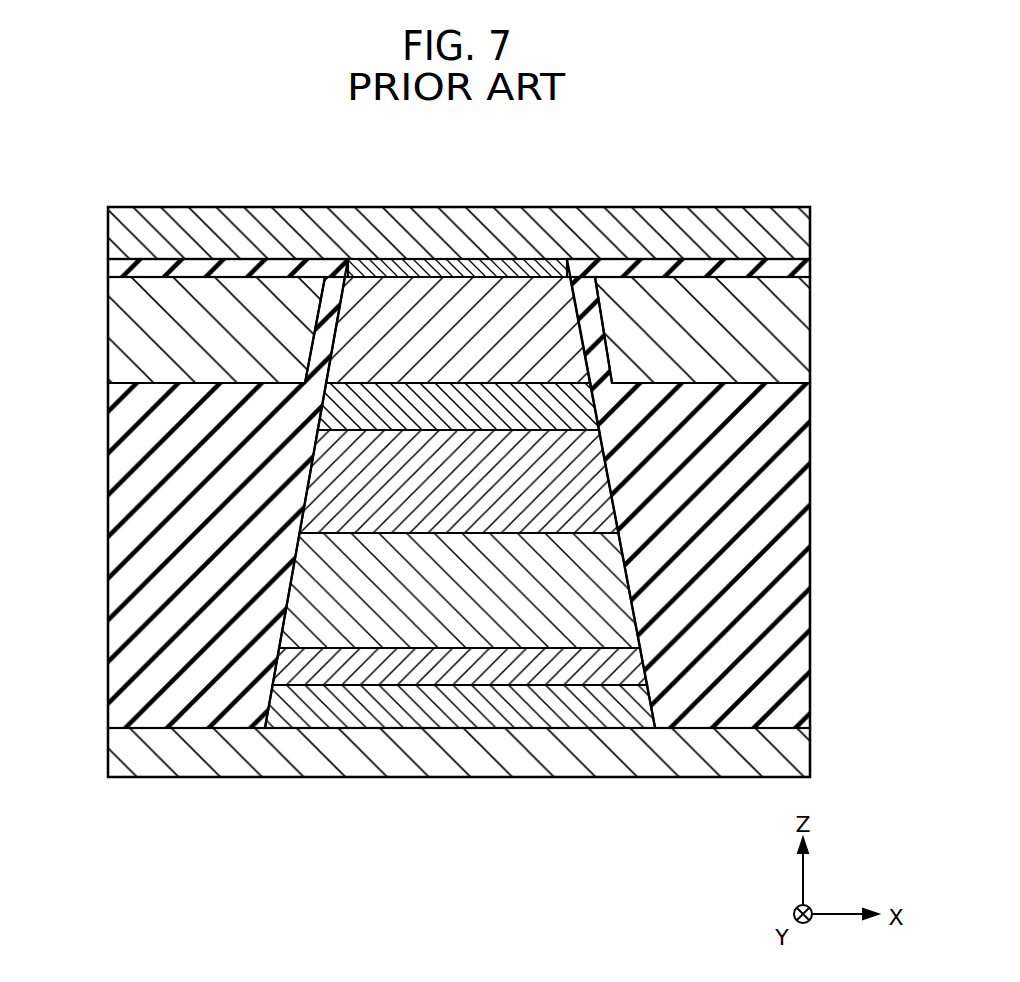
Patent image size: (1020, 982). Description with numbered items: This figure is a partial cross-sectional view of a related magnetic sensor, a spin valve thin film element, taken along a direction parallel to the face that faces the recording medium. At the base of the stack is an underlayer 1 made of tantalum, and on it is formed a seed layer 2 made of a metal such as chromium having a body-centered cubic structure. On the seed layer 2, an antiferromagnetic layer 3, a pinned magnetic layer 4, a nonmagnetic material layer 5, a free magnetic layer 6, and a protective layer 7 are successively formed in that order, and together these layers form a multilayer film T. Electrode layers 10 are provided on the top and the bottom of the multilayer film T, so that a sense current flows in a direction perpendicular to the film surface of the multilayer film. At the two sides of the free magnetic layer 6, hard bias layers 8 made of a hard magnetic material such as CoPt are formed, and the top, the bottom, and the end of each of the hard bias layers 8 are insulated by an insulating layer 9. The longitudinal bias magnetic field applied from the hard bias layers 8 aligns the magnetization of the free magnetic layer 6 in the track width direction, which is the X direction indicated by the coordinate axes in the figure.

The underlayer 1 is at (567, 712).
The seed layer 2 is at (520, 665).
The antiferromagnetic layer 3 is at (458, 628).
The pinned magnetic layer 4 is at (382, 510).
The nonmagnetic material layer 5 is at (486, 400).
The free magnetic layer 6 is at (422, 294).
The protective layer 7 is at (538, 268).
The hard bias layer 8 is at (118, 360).
The insulating layer 9 is at (117, 272).
The electrode layer 10 is at (797, 232).
The multilayer film T is at (383, 246).